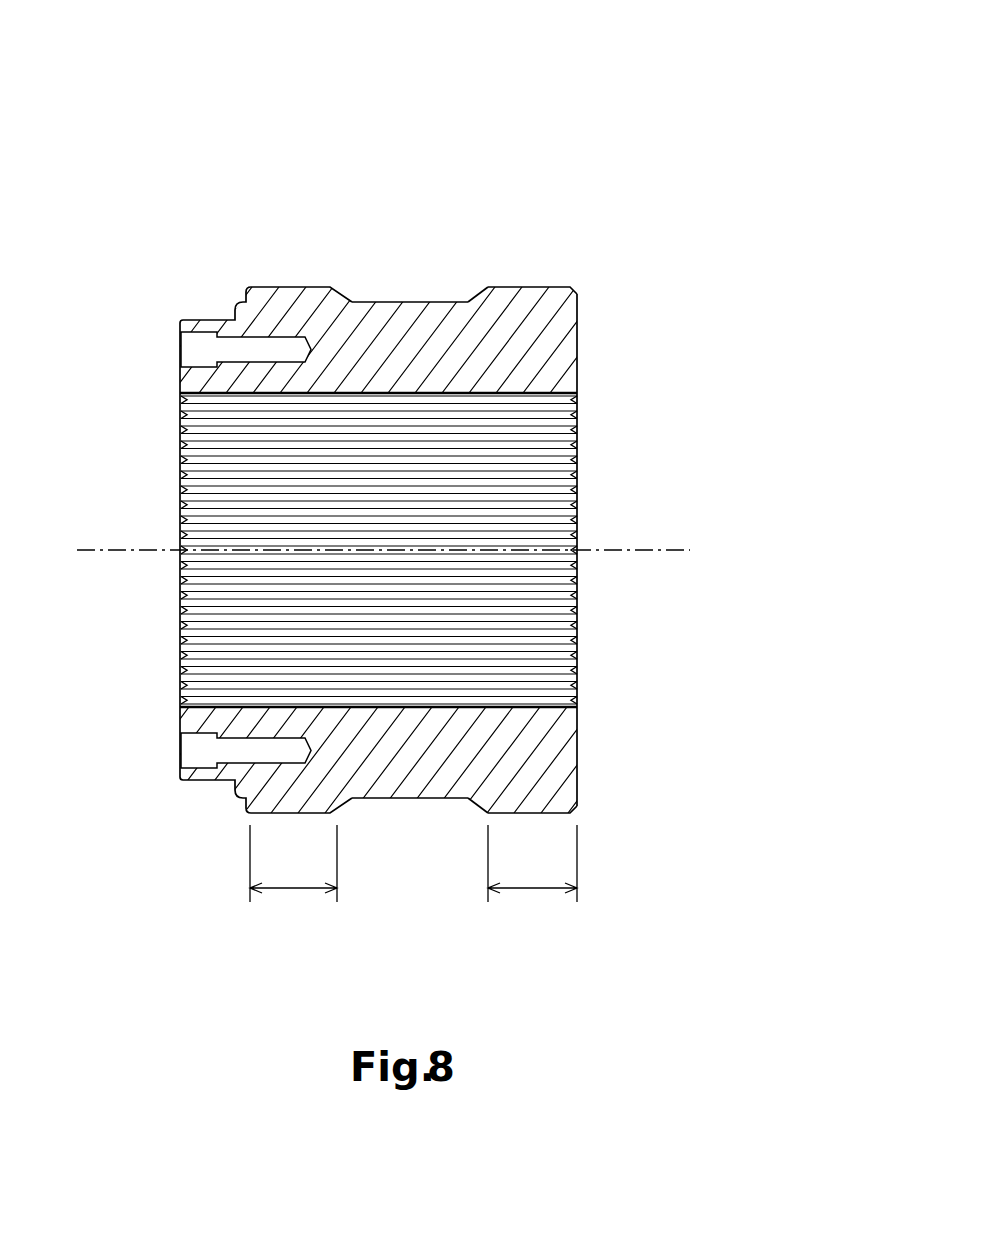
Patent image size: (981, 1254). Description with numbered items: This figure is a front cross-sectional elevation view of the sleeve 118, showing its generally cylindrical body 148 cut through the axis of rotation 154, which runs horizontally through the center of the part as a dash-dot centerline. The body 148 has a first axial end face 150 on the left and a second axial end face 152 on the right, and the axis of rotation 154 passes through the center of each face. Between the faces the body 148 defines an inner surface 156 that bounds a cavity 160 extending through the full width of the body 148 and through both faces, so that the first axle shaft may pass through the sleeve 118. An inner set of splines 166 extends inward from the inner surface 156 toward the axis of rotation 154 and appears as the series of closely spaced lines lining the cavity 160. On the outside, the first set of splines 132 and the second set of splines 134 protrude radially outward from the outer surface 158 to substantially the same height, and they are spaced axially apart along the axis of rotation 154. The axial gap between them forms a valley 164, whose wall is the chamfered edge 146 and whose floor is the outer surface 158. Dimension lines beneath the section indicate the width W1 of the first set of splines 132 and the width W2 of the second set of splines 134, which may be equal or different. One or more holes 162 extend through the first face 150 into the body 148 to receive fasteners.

The sleeve 118 is at (422, 510).
The first set of splines 132 is at (280, 287).
The second set of splines 134 is at (531, 286).
The chamfered edge 146 is at (351, 300).
The body 148 is at (548, 325).
The first axial end face 150 is at (178, 377).
The second axial end face 152 is at (578, 368).
The axis of rotation 154 is at (676, 549).
The inner surface 156 is at (240, 483).
The outer surface 158 is at (442, 299).
The cavity 160 is at (579, 650).
The holes 162 is at (260, 347).
The valley 164 is at (413, 301).
The inner set of splines 166 is at (182, 608).
The width of the first set of splines W1 is at (293, 890).
The width of the second set of splines W2 is at (532, 890).